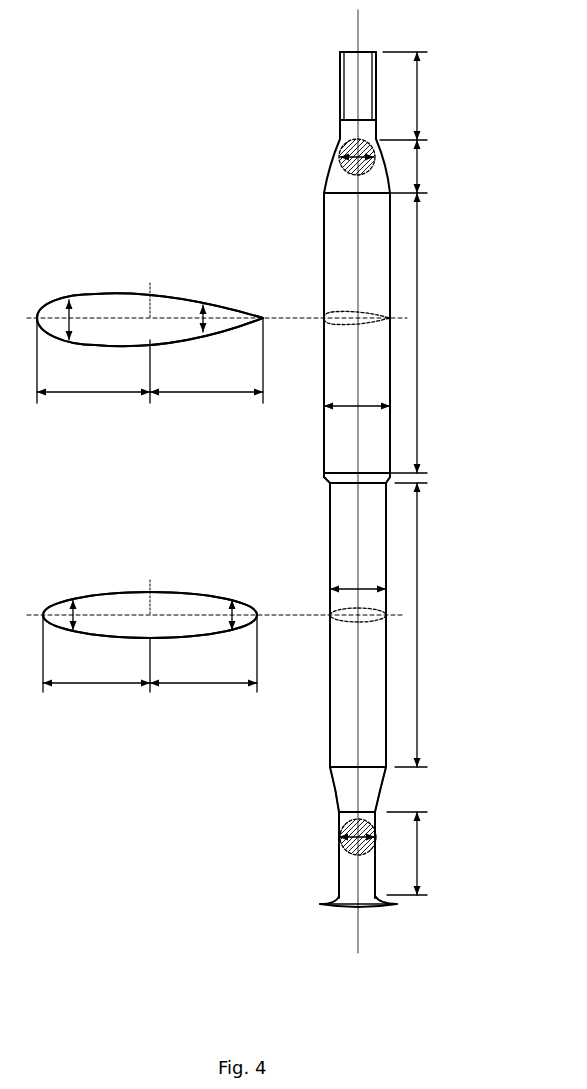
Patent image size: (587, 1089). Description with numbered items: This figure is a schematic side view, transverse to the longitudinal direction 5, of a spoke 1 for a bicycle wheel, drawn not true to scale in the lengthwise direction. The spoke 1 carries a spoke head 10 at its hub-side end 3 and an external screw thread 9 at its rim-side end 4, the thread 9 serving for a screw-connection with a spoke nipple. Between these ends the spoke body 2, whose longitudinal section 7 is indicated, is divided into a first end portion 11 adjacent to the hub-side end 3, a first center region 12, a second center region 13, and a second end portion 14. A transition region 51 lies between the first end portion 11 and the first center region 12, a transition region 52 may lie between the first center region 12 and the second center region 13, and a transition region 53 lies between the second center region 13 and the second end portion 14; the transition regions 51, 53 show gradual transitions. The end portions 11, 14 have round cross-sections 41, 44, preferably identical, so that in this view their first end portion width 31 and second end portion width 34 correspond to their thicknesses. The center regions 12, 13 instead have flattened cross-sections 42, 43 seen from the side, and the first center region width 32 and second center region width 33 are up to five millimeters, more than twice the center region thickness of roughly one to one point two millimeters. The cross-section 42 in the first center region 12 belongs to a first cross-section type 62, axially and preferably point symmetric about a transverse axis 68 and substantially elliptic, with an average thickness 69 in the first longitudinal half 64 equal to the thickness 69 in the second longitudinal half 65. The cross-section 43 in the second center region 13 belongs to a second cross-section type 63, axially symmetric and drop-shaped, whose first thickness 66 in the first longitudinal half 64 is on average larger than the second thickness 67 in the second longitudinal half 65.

The spoke 1 is at (305, 36).
The spoke body 2 is at (337, 885).
The hub-side end 3 is at (310, 925).
The rim-side end 4 is at (313, 77).
The longitudinal direction 5 is at (360, 27).
The longitudinal section 7 is at (312, 282).
The screw thread 9 is at (377, 85).
The spoke head 10 is at (419, 894).
The first end portion 11 is at (425, 857).
The first center region 12 is at (435, 597).
The second center region 13 is at (430, 307).
The second end portion 14 is at (417, 113).
The first end portion width 31 is at (360, 837).
The first center region width 32 is at (357, 588).
The second center region width 33 is at (344, 406).
The second end portion width 34 is at (360, 152).
The cross-section 41 is at (360, 845).
The cross-section 42 is at (357, 622).
The cross-section 43 is at (358, 325).
The cross-section 44 is at (360, 160).
The transition region 51 is at (417, 788).
The transition region 52 is at (417, 477).
The transition region 53 is at (417, 165).
The cross-section type 62 is at (102, 585).
The cross-section type 63 is at (82, 288).
The first longitudinal half 64 is at (67, 393).
The second longitudinal half 65 is at (180, 393).
The first thickness 66 is at (75, 323).
The second thickness 67 is at (200, 330).
The transverse axis 68 is at (153, 285).
The thickness 69 is at (78, 620).